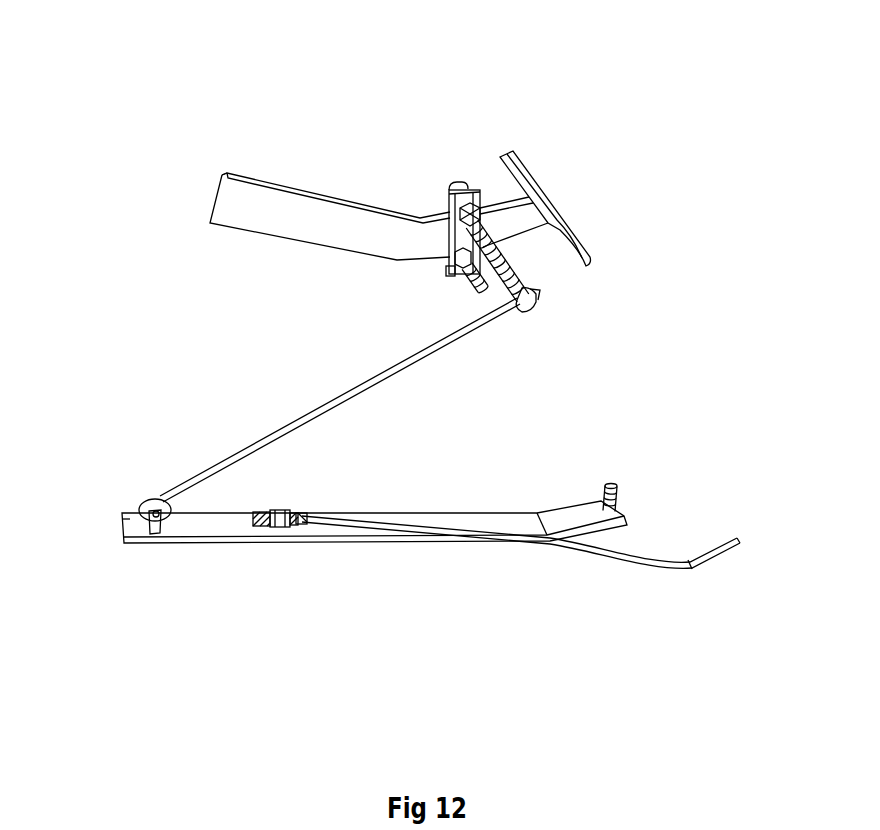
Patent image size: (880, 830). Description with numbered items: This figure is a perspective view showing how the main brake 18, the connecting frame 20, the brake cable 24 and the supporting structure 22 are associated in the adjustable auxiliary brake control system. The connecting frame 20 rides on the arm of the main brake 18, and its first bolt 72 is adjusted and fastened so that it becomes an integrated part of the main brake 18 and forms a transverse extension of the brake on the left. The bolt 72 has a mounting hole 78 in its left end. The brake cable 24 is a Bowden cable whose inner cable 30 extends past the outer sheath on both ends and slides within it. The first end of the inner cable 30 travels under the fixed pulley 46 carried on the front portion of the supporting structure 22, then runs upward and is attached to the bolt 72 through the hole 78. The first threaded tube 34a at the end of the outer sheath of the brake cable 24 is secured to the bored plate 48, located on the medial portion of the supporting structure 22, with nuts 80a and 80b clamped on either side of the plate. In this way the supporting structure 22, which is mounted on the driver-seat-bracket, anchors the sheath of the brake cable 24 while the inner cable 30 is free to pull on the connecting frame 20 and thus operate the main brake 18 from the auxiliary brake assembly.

The main brake 18 is at (282, 188).
The connecting frame 20 is at (463, 160).
The supporting structure 22 is at (447, 518).
The brake cable 24 is at (548, 562).
The inner cable 30 is at (318, 407).
The first threaded tube 34a is at (297, 518).
The fixed pulley 46 is at (143, 505).
The bored plate 48 is at (278, 527).
The first bolt 72 is at (513, 272).
The mounting hole 78 is at (533, 298).
The nut 80a is at (273, 523).
The nut 80b is at (292, 525).